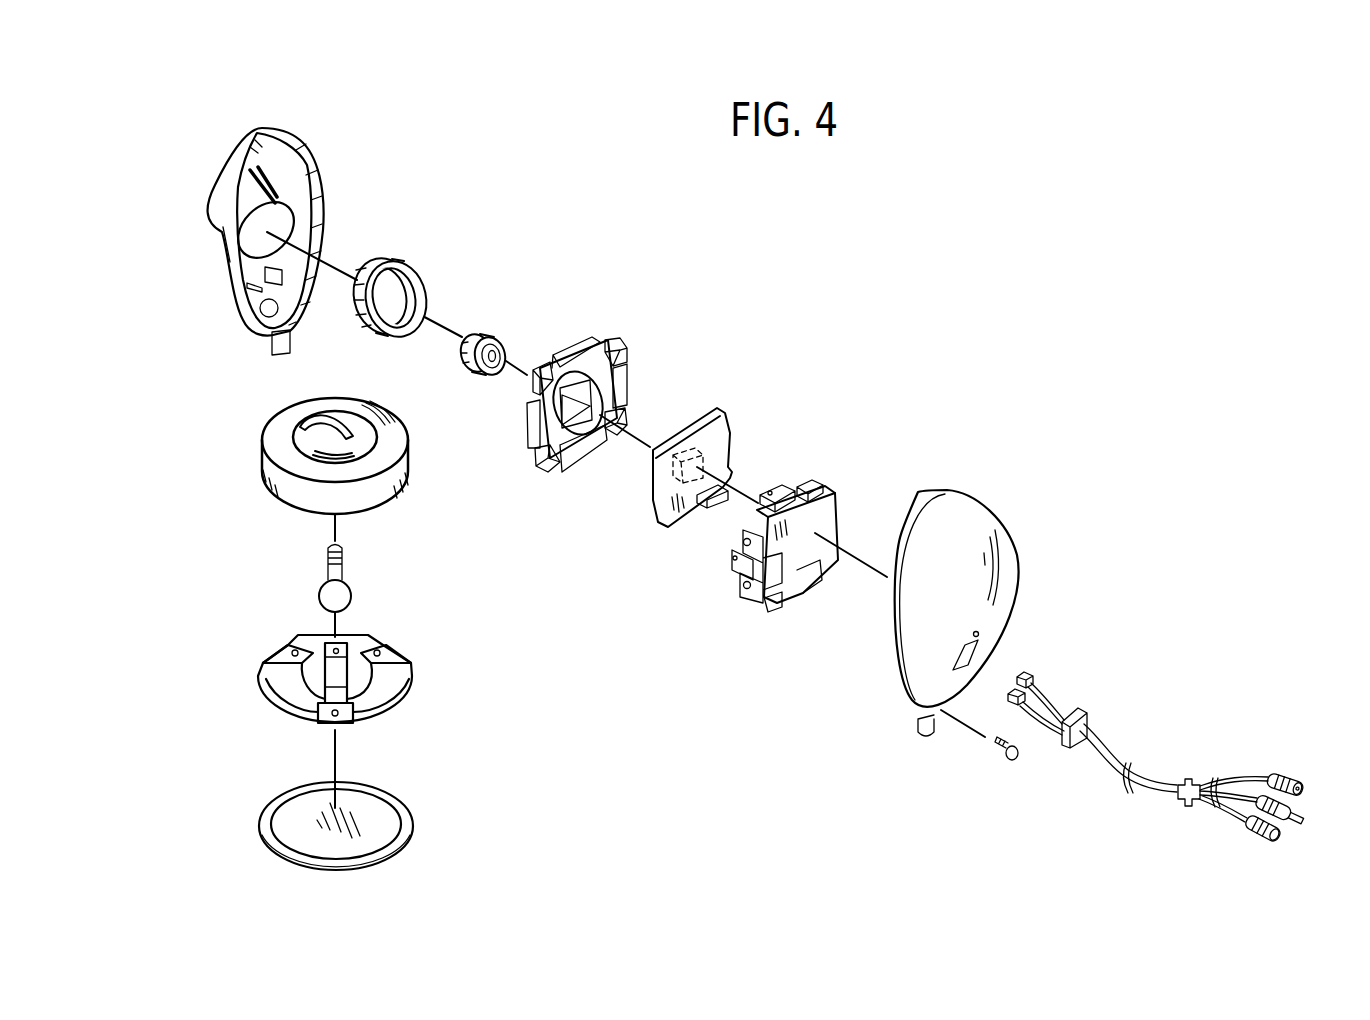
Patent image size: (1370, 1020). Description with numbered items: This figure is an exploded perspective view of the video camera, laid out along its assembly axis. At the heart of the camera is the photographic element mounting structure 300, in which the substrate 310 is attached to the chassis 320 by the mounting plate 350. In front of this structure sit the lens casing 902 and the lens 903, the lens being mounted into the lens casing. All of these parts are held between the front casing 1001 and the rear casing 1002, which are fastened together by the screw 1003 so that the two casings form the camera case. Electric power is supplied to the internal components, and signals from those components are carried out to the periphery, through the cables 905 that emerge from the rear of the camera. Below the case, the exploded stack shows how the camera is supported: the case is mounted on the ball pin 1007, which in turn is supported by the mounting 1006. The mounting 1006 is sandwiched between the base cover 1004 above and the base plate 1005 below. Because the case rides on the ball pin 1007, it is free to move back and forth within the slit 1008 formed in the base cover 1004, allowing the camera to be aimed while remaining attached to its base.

The front casing 1001 is at (240, 130).
The rear casing 1002 is at (960, 492).
The screw 1003 is at (996, 758).
The base cover 1004 is at (388, 479).
The base plate 1005 is at (413, 824).
The mounting 1006 is at (413, 676).
The ball pin 1007 is at (347, 575).
The slit 1008 is at (330, 425).
The lens casing 902 is at (397, 258).
The lens 903 is at (488, 333).
The photographic element mounting structure 300 is at (902, 397).
The chassis 320 is at (593, 332).
The substrate 310 is at (707, 407).
The mounting plate 350 is at (820, 480).
The cables 905 is at (1108, 746).